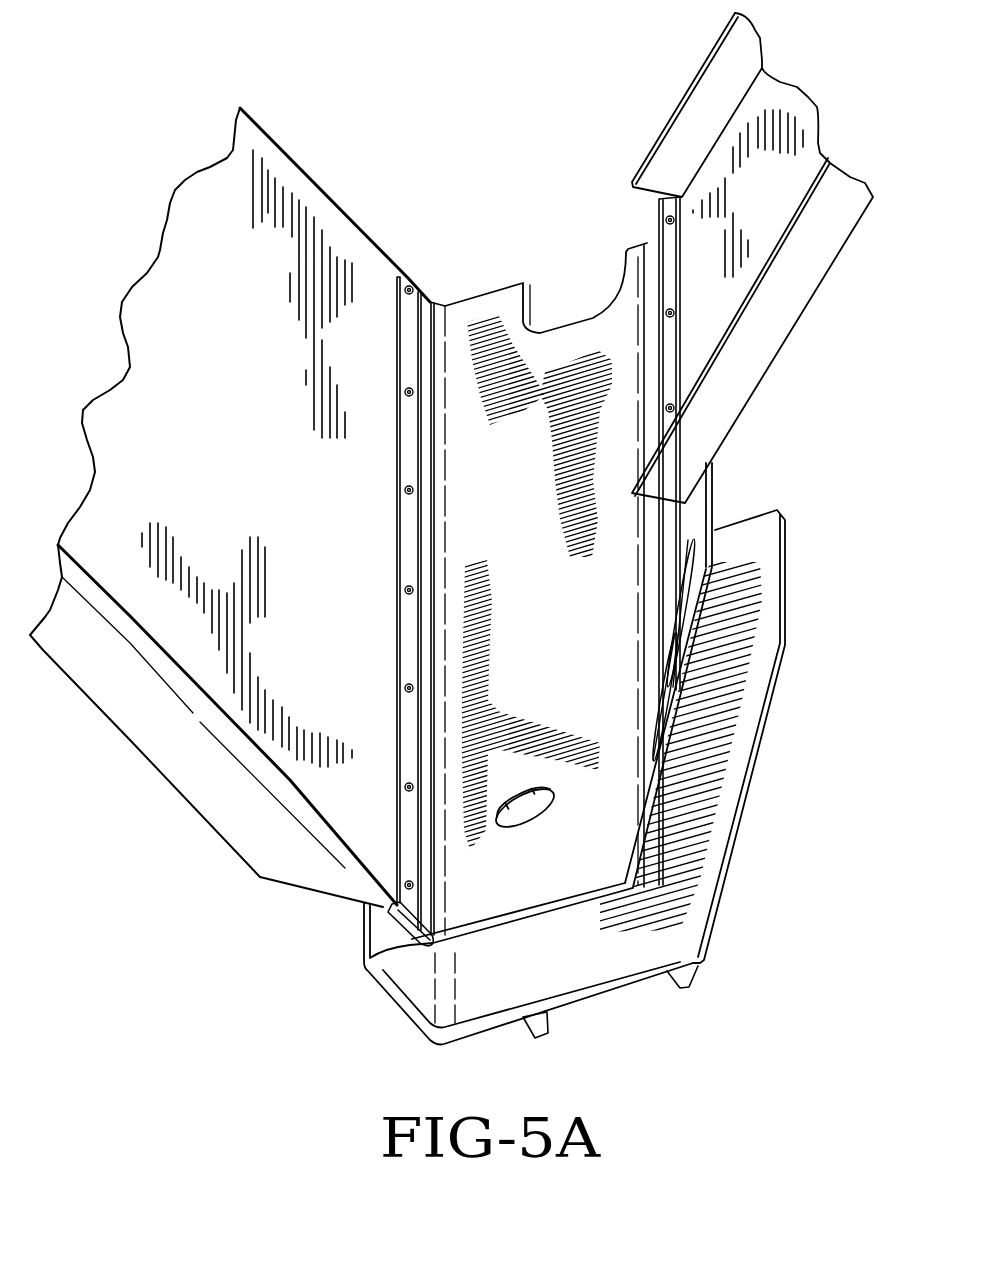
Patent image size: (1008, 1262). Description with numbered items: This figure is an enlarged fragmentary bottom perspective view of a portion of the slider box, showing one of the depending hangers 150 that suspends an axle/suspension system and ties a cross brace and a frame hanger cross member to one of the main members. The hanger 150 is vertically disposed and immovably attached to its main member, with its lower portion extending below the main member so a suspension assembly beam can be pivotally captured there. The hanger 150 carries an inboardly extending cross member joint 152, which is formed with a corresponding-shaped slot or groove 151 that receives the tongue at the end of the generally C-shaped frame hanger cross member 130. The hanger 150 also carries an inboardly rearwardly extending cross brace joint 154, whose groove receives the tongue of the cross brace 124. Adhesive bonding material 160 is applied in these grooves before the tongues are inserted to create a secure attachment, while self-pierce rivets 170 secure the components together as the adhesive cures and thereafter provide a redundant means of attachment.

The cross brace 124 is at (793, 330).
The frame hanger cross member 130 is at (318, 187).
The hanger 150 is at (718, 900).
The slot or groove 151 is at (437, 937).
The cross member joint 152 is at (430, 303).
The cross brace joint 154 is at (653, 240).
The adhesive bonding material 160 is at (410, 945).
The self-pierce rivets 170 is at (412, 288).